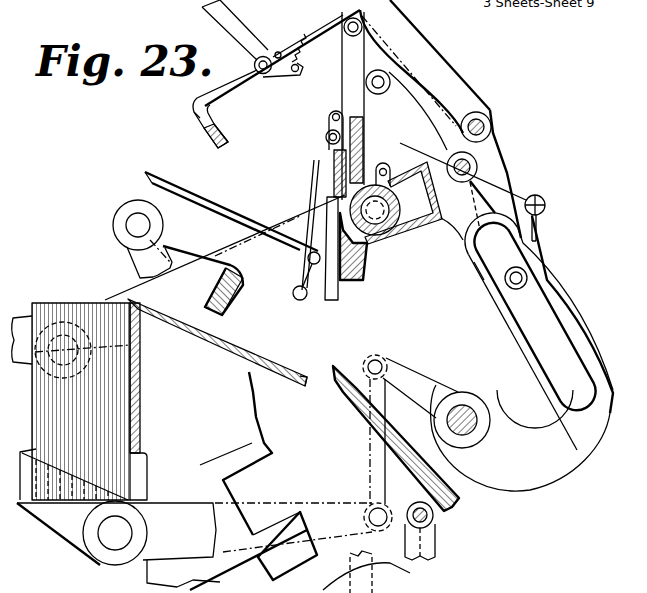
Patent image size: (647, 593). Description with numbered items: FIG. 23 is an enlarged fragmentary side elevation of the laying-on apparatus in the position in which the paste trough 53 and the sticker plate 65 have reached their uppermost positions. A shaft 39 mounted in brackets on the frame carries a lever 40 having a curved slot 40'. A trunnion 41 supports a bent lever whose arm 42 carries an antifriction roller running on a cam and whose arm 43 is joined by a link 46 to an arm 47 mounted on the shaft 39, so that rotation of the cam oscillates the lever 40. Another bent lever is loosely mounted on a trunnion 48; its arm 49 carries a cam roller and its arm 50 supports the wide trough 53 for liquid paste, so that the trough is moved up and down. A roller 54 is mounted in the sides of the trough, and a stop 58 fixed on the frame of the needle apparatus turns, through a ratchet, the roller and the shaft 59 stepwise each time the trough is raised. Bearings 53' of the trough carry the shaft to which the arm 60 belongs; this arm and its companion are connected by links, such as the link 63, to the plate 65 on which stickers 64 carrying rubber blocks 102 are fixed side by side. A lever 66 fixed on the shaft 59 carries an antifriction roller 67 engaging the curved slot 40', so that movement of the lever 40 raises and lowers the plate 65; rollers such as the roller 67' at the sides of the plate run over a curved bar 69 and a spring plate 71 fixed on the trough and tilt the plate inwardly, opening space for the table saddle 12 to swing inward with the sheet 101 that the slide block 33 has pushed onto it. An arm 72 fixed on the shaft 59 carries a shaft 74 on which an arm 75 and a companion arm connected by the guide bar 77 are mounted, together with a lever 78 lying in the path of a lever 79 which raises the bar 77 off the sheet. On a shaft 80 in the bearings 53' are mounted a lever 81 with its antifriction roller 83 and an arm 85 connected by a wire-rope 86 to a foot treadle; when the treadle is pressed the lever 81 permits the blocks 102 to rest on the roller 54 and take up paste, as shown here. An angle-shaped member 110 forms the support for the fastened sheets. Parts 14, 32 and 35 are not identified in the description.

The table saddle 12 is at (240, 407).
The link 14 is at (190, 572).
The pivot pin 32 is at (434, 517).
The slide block 33 is at (458, 503).
The bracket 35 is at (438, 544).
The shaft 39 is at (476, 418).
The lever 40 is at (522, 352).
The curved slot 40' is at (454, 279).
The trunnion 41 is at (108, 540).
The arm of bent lever 42 is at (48, 513).
The arm of bent lever 43 is at (160, 508).
The link 46 is at (368, 430).
The arm 47 is at (414, 374).
The trunnion 48 is at (63, 340).
The arm of bent lever 49 is at (92, 403).
The arm of bent lever 50 is at (180, 300).
The trough 53 is at (377, 232).
The bearings 53' is at (443, 235).
The roller 54 is at (436, 206).
The stop 58 is at (227, 215).
The shaft 59 is at (490, 122).
The arm 60 is at (378, 43).
The link 63 is at (378, 22).
The stickers 64 is at (334, 174).
The plate 65 is at (364, 158).
The lever 66 is at (498, 157).
The antifriction roller 67 is at (537, 272).
The roller 67' is at (311, 130).
The curved bar 69 is at (326, 138).
The spring plate 71 is at (302, 200).
The arm 72 is at (326, 20).
The shaft 74 is at (265, 56).
The arm 75 is at (195, 110).
The bar 77 is at (222, 140).
The lever 78 is at (224, 30).
The lever 79 is at (228, 300).
The shaft 80 is at (392, 162).
The lever 81 is at (417, 107).
The antifriction roller 83 is at (366, 84).
The arm 85 is at (536, 195).
The wire-rope 86 is at (538, 245).
The sheet 101 is at (294, 376).
The rubber blocks 102 is at (296, 276).
The angle-shaped member 110 is at (20, 325).